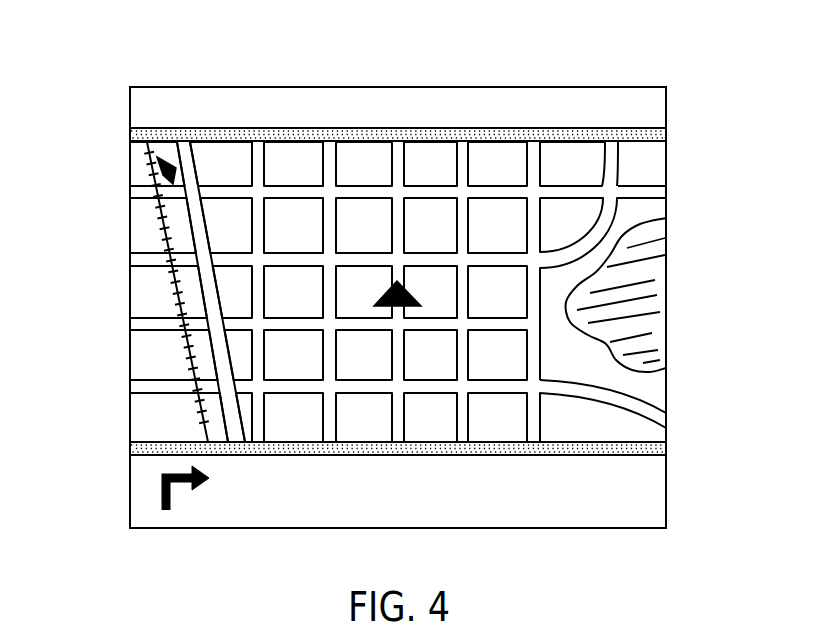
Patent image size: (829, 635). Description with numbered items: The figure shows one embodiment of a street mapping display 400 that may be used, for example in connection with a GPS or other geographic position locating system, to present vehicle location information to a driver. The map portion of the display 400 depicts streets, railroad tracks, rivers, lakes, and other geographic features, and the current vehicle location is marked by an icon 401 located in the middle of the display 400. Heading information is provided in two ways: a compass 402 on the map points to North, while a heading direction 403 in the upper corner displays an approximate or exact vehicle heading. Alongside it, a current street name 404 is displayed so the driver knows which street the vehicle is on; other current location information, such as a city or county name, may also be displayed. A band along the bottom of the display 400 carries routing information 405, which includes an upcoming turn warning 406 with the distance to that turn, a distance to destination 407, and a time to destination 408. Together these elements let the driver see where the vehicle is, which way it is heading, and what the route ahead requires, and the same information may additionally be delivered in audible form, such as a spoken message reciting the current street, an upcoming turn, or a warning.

The display 400 is at (668, 292).
The icon 401 is at (386, 305).
The compass 402 is at (163, 175).
The heading direction 403 is at (152, 112).
The current street name 404 is at (647, 112).
The routing information 405 is at (655, 491).
The upcoming turn warning 406 is at (249, 522).
The distance to destination 407 is at (417, 522).
The time to destination 408 is at (568, 522).